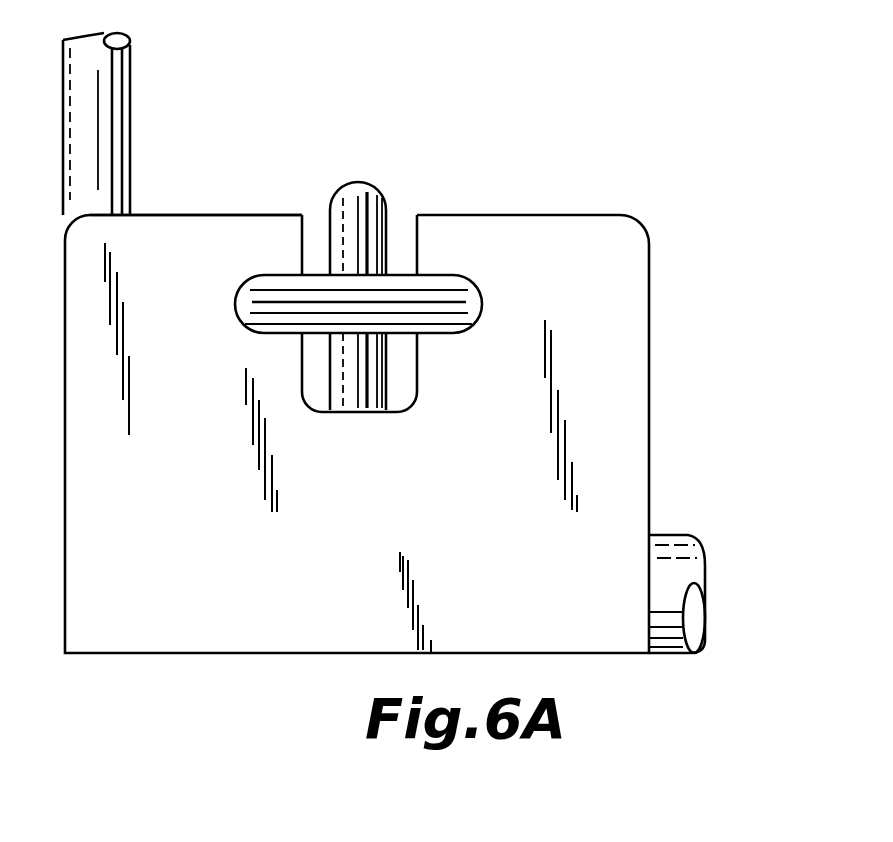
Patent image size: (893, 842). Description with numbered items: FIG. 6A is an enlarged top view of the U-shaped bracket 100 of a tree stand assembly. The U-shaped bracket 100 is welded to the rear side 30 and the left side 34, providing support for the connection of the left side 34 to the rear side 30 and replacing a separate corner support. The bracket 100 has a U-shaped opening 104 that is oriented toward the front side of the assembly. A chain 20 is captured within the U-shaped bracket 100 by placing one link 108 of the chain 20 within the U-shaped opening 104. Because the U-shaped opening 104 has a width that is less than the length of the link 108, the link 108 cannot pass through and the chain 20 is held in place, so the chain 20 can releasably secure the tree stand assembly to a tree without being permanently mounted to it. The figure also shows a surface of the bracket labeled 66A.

The U-shaped bracket 100 is at (197, 493).
The U-shaped opening 104 is at (402, 383).
The chain 20 is at (364, 174).
The link 108 is at (473, 287).
The left side 34 is at (83, 88).
The rear side 30 is at (672, 585).
The top surface of housing 66A is at (253, 245).